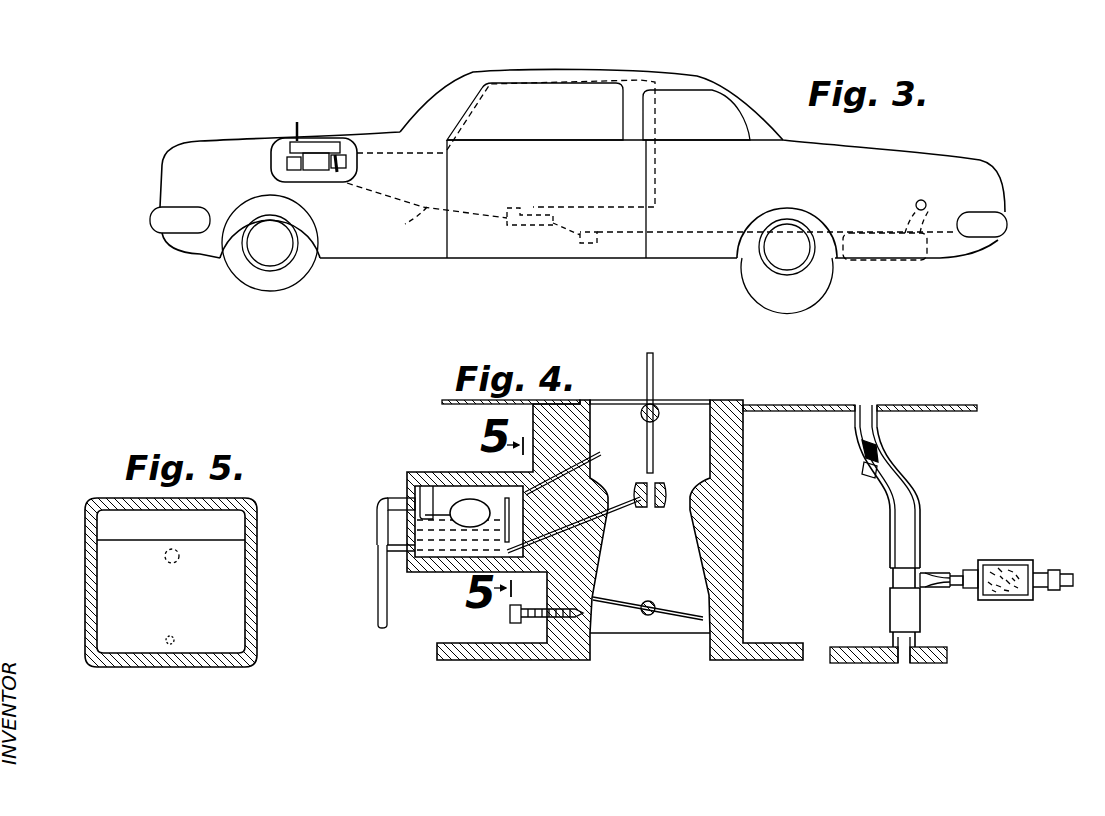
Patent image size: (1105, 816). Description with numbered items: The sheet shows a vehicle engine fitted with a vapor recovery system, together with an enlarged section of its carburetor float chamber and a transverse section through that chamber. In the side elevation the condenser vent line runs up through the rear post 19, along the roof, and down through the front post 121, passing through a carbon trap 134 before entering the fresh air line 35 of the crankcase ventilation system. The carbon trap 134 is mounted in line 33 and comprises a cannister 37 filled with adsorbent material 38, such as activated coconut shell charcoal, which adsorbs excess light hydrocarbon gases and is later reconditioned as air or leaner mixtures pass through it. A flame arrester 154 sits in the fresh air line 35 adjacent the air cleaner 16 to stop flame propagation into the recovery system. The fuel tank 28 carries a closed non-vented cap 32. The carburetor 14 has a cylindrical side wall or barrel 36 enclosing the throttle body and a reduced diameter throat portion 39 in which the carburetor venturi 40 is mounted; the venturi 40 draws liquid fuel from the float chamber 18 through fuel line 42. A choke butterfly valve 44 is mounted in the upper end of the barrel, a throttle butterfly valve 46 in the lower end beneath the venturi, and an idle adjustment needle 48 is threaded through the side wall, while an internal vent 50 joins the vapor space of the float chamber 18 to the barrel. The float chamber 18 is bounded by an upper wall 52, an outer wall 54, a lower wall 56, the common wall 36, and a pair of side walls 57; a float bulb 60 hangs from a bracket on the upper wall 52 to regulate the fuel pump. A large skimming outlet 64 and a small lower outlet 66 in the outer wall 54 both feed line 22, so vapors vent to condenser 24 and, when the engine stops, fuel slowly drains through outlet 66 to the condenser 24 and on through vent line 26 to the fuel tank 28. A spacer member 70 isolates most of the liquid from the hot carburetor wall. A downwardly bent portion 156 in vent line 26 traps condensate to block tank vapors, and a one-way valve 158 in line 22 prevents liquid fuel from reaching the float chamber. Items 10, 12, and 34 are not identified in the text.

In FIG. 3, the automobile 10 is at (588, 56).
In FIG. 3, the engine 12 is at (360, 169).
In FIG. 3, the carburetor 14 is at (313, 155).
In FIG. 3, the air cleaner 16 is at (297, 113).
In FIG. 3, the float chamber 18 is at (290, 147).
In FIG. 4, the float chamber 18 is at (427, 471).
In FIG. 3, the rear post 19 is at (669, 118).
In FIG. 3, the line 22 is at (374, 193).
In FIG. 4, the line 22 is at (376, 600).
In FIG. 3, the condenser 24 is at (516, 208).
In FIG. 3, the vent line 26 is at (704, 231).
In FIG. 3, the fuel tank 28 is at (929, 218).
In FIG. 3, the closed non-vented cap 32 is at (928, 202).
In FIG. 3, the line 33 is at (658, 170).
In FIG. 4, the line 33 is at (1069, 572).
In FIG. 3, the wiring harness 34 is at (357, 150).
In FIG. 3, the fresh air line 35 is at (340, 179).
In FIG. 4, the fresh air line 35 is at (920, 520).
In FIG. 4, the side wall or barrel 36 is at (745, 493).
In FIG. 4, the cannister 37 is at (1020, 560).
In FIG. 4, the adsorbent material 38 is at (1010, 597).
In FIG. 4, the throat portion 39 is at (686, 512).
In FIG. 4, the carburetor venturi 40 is at (648, 488).
In FIG. 4, the fuel line 42 is at (635, 494).
In FIG. 4, the choke butterfly valve 44 is at (655, 377).
In FIG. 4, the throttle butterfly valve 46 is at (696, 614).
In FIG. 4, the idle adjustment needle 48 is at (507, 615).
In FIG. 4, the internal vent 50 is at (585, 462).
In FIG. 4, the upper wall 52 is at (470, 475).
In FIG. 4, the outer wall 54 is at (377, 524).
In FIG. 4, the lower wall 56 is at (440, 573).
In FIG. 5, the side walls 57 is at (85, 565).
In FIG. 4, the float bulb 60 is at (470, 513).
In FIG. 4, the skimming outlet 64 is at (410, 490).
In FIG. 5, the skimming outlet 64 is at (172, 549).
In FIG. 4, the small diameter outlet 66 is at (396, 553).
In FIG. 5, the small diameter outlet 66 is at (175, 640).
In FIG. 4, the spacer member 70 is at (503, 548).
In FIG. 3, the front post 121 is at (455, 130).
In FIG. 4, the carbon trap 134 is at (985, 557).
In FIG. 4, the flame arrester 154 is at (880, 448).
In FIG. 3, the downwardly bent portion 156 is at (597, 243).
In FIG. 3, the one-way valve 158 is at (416, 227).